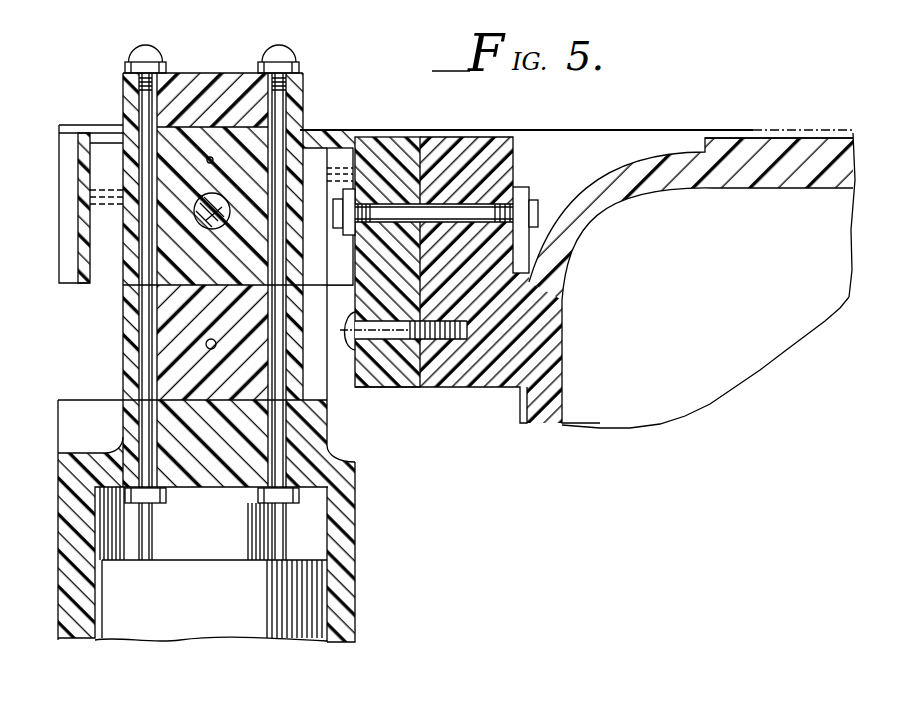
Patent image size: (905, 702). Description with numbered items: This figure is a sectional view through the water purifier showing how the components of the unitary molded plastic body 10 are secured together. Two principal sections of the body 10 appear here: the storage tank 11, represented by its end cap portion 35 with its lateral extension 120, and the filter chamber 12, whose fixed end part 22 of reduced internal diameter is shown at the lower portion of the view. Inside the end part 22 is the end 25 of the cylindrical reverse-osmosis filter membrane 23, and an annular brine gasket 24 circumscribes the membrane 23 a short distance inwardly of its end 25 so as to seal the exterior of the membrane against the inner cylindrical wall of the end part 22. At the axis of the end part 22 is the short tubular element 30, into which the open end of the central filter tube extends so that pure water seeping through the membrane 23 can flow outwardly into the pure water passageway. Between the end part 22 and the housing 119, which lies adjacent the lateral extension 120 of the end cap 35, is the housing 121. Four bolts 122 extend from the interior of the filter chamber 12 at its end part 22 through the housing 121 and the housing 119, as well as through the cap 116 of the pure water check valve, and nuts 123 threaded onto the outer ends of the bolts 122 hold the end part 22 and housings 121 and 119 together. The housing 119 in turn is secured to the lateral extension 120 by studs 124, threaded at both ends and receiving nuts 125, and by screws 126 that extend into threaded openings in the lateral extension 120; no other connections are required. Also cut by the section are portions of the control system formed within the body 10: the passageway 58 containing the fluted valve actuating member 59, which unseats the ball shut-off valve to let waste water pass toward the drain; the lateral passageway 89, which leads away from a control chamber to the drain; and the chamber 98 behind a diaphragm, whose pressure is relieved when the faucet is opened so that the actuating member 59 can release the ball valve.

The unitary molded plastic body 10 is at (577, 256).
The storage tank 11 is at (806, 131).
The filter chamber 12 is at (233, 521).
The end part 22 is at (356, 587).
The reverse-osmosis filter membrane 23 is at (184, 632).
The brine gasket 24 is at (327, 613).
The membrane end 25 is at (299, 560).
The short tubular element 30 is at (204, 550).
The end cap portion 35 is at (770, 138).
The passageway 58 is at (212, 229).
The fluted valve actuating member 59 is at (203, 195).
The lateral passageway 89 is at (212, 349).
The chamber 98 is at (207, 160).
The cap 116 is at (124, 80).
The housing 119 is at (337, 146).
The lateral extension 120 is at (457, 389).
The housing 121 is at (122, 343).
The bolts 122 is at (134, 311).
The nuts 123 is at (130, 51).
The studs 124 is at (480, 202).
The nuts 125 is at (530, 188).
The screws 126 is at (410, 319).